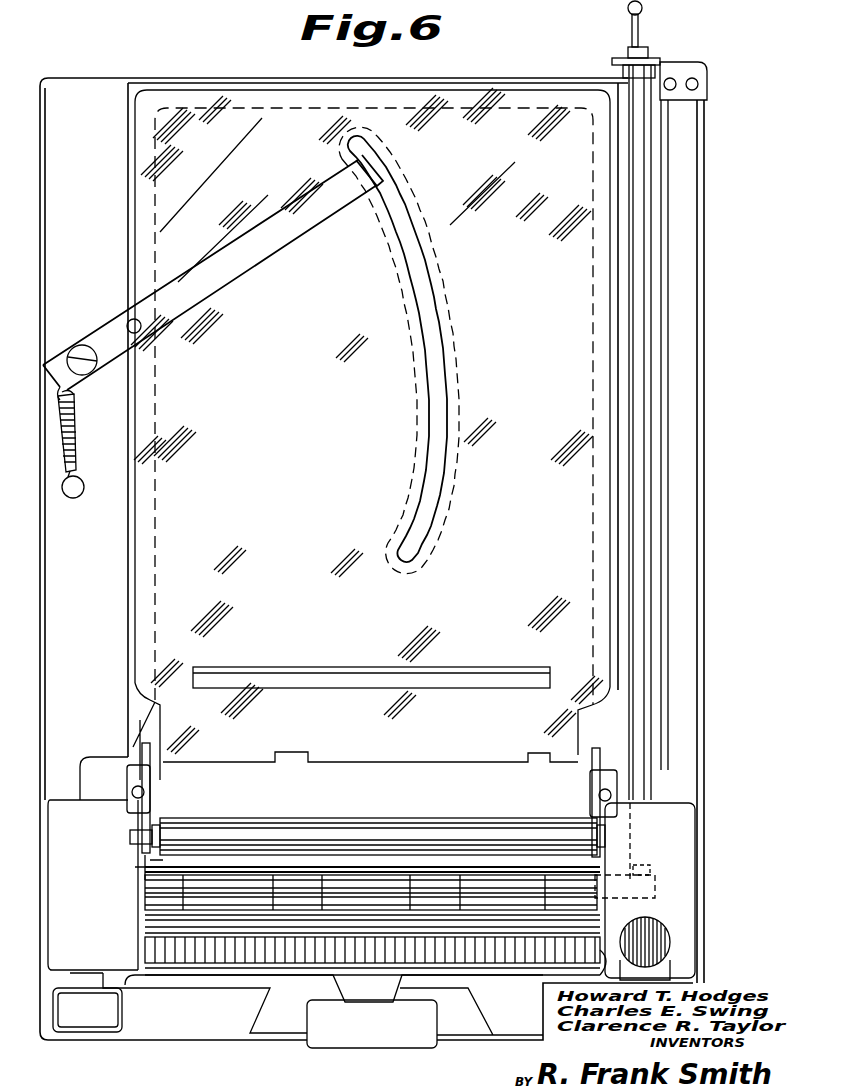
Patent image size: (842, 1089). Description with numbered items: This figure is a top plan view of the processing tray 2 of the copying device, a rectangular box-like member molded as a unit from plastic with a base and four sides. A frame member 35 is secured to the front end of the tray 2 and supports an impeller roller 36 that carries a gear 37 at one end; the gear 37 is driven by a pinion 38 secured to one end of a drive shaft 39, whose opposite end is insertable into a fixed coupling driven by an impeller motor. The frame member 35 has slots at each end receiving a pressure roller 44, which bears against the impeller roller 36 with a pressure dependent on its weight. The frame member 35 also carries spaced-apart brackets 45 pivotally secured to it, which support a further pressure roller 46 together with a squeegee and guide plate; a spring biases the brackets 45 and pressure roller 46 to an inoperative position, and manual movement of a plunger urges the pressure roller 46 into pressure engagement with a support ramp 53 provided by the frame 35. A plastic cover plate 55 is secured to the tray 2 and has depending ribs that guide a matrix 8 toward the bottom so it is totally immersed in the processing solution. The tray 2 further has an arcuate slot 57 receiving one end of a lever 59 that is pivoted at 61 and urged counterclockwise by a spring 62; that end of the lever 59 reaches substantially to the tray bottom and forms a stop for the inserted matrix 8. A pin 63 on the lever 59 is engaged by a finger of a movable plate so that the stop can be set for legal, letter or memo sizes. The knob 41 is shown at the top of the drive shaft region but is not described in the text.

The processing tray 2 is at (690, 662).
The matrix 8 is at (449, 190).
The frame member 35 is at (607, 950).
The impeller roller 36 is at (500, 898).
The gear 37 is at (652, 888).
The pinion 38 is at (642, 862).
The drive shaft 39 is at (640, 733).
The operating knob 41 is at (643, 16).
The pressure roller 44 is at (140, 873).
The brackets 45 is at (150, 828).
The pressure roller 46 is at (357, 833).
The support ramp 53 is at (227, 950).
The cover plate 55 is at (318, 389).
The arcuate slot 57 is at (433, 367).
The lever 59 is at (262, 247).
The pivot 61 is at (82, 345).
The spring 62 is at (78, 450).
The pin 63 is at (140, 330).